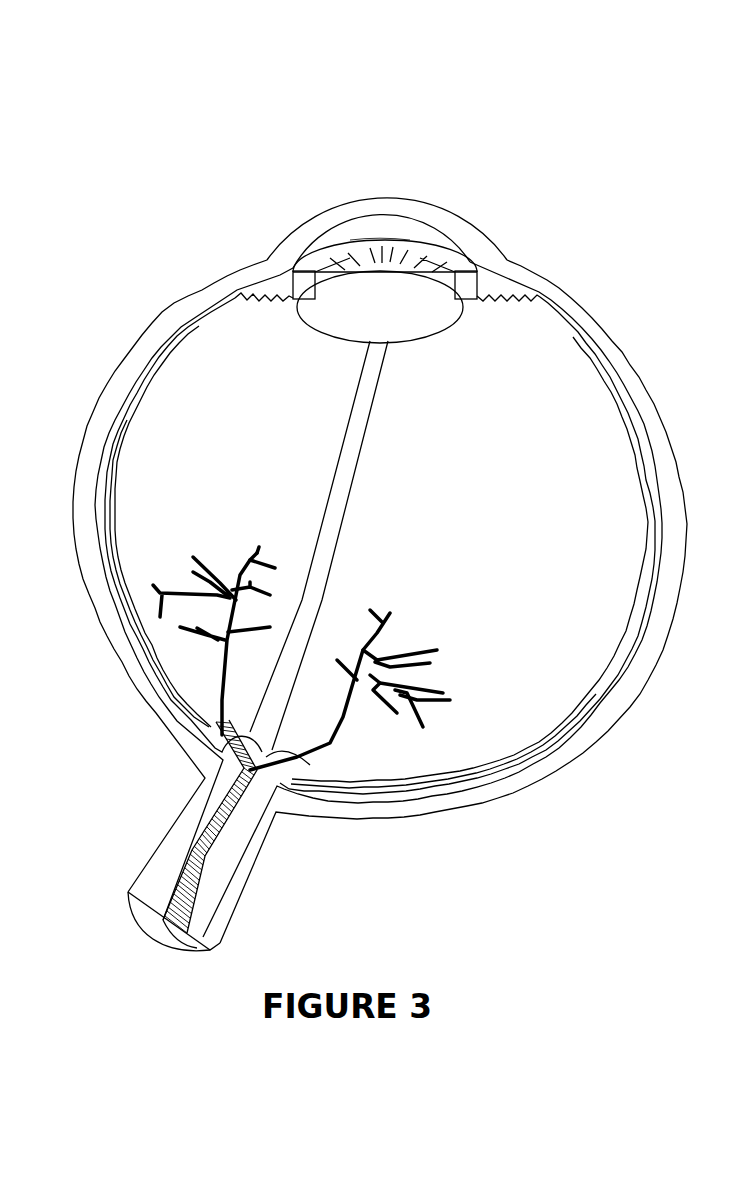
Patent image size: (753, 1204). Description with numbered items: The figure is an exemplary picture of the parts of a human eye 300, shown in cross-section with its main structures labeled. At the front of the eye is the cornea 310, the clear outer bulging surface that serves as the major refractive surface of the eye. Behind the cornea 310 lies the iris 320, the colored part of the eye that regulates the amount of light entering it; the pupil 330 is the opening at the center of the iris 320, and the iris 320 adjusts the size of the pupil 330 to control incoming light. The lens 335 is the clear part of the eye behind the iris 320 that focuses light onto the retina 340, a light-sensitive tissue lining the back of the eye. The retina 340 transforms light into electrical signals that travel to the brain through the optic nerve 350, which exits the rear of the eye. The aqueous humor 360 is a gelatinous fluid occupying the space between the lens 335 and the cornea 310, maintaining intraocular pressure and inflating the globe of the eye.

The human eye 300 is at (214, 84).
The cornea 310 is at (433, 207).
The iris 320 is at (316, 316).
The pupil 330 is at (374, 243).
The lens 335 is at (398, 318).
The retina 340 is at (116, 428).
The optic nerve 350 is at (183, 850).
The aqueous humor 360 is at (437, 240).